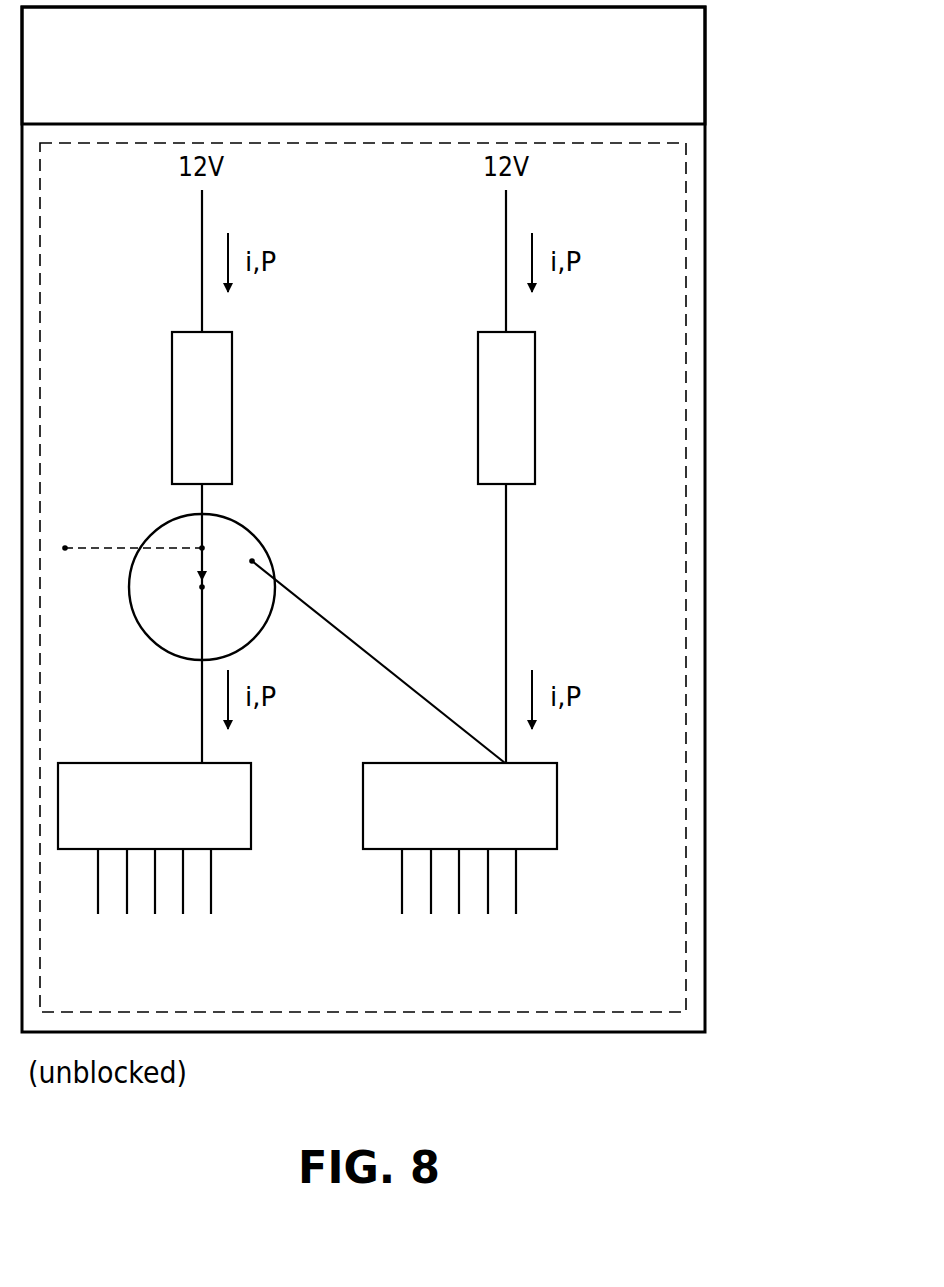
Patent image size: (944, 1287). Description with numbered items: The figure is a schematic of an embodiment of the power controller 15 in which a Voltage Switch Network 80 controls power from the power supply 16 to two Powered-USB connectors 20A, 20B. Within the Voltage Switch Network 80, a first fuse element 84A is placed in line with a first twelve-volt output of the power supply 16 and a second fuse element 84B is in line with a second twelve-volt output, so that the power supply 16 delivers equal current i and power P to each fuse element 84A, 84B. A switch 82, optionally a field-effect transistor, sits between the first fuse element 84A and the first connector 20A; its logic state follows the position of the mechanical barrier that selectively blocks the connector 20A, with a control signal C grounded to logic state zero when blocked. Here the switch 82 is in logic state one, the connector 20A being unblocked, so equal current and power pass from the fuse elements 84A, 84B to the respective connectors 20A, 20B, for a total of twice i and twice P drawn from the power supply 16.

The power controller 15 is at (706, 312).
The power supply 16 is at (706, 60).
The Voltage Switch Network 80 is at (697, 386).
The switch 82 is at (250, 528).
The first fuse element 84A is at (172, 403).
The second fuse element 84B is at (478, 403).
The first connector 20A is at (128, 822).
The second connector 20B is at (433, 822).